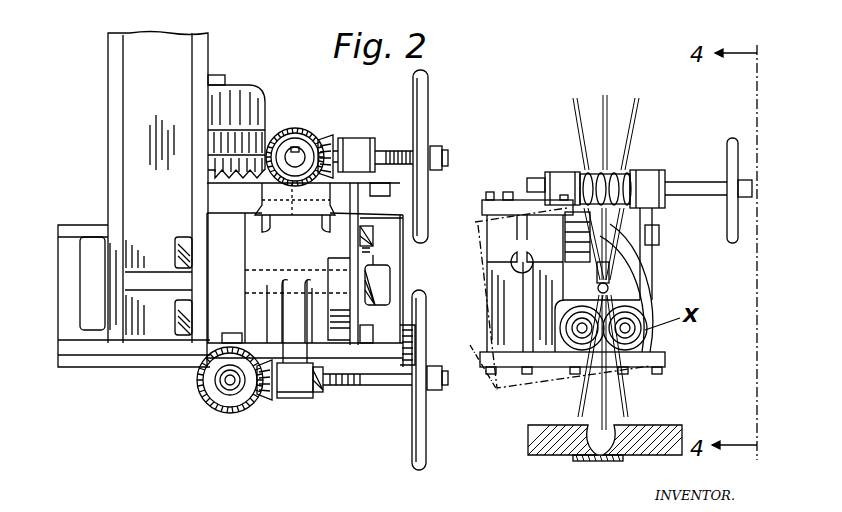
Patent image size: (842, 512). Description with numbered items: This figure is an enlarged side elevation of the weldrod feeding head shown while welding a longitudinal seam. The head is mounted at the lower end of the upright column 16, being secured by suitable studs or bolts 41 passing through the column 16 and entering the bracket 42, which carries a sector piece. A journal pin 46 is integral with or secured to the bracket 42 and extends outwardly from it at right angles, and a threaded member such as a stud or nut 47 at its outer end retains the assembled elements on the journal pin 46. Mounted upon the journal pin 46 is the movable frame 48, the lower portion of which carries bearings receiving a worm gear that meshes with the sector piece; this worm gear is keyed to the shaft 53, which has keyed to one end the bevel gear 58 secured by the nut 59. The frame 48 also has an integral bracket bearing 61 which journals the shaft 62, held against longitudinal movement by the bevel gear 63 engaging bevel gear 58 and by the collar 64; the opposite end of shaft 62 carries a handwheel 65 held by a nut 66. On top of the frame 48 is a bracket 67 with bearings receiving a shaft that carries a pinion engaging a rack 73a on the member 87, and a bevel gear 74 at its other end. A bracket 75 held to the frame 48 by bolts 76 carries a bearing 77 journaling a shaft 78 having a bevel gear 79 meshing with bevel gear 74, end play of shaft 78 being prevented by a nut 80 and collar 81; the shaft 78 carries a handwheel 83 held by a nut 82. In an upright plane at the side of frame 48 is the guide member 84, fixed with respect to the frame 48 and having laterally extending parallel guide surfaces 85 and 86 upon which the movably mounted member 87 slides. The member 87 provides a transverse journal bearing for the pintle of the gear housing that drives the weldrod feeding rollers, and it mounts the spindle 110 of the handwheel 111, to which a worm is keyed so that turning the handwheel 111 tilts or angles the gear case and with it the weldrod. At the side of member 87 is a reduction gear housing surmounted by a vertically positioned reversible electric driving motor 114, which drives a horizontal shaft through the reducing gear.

The upright column 16 is at (108, 97).
The studs or bolts 41 is at (178, 240).
The bracket 42 is at (305, 275).
The journal pin 46 is at (262, 272).
The stud or nut 47 is at (388, 283).
The movable frame 48 is at (290, 296).
The shaft 53 is at (218, 407).
The bevel gear 58 is at (198, 397).
The nut 59 is at (231, 386).
The bracket bearing 61 is at (298, 400).
The shaft 62 is at (385, 388).
The bevel gear 63 is at (266, 400).
The collar 64 is at (323, 392).
The handwheel 65 is at (427, 440).
The nut 66 is at (440, 388).
The bracket 67 is at (293, 203).
The rack 73a is at (242, 173).
The bevel gear 74 is at (300, 128).
The bracket 75 is at (357, 210).
The bolts 76 is at (370, 240).
The bearing 77 is at (372, 142).
The shaft 78 is at (385, 153).
The bevel gear 79 is at (342, 137).
The nut 80 is at (322, 145).
The collar 81 is at (384, 140).
The nut 82 is at (437, 152).
The handwheel 83 is at (421, 108).
The guide member 84 is at (403, 262).
The guide surface 85 is at (400, 235).
The guide surface 86 is at (400, 328).
The movably mounted member 87 is at (482, 340).
The spindle 110 is at (688, 183).
The handwheel 111 is at (730, 142).
The electric driving motor 114 is at (248, 94).